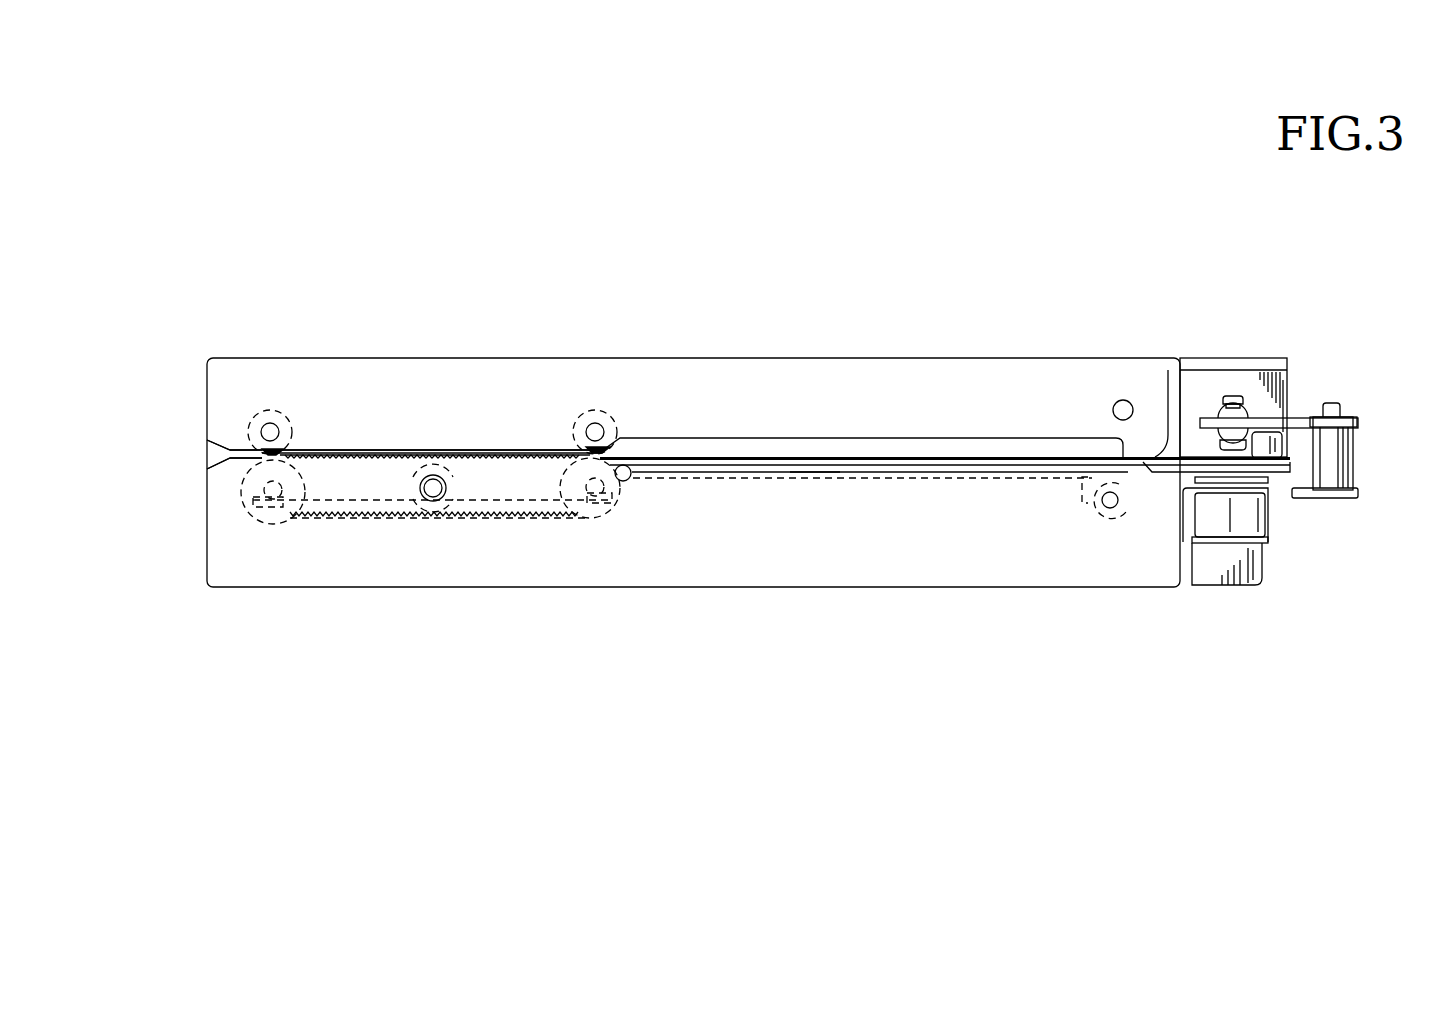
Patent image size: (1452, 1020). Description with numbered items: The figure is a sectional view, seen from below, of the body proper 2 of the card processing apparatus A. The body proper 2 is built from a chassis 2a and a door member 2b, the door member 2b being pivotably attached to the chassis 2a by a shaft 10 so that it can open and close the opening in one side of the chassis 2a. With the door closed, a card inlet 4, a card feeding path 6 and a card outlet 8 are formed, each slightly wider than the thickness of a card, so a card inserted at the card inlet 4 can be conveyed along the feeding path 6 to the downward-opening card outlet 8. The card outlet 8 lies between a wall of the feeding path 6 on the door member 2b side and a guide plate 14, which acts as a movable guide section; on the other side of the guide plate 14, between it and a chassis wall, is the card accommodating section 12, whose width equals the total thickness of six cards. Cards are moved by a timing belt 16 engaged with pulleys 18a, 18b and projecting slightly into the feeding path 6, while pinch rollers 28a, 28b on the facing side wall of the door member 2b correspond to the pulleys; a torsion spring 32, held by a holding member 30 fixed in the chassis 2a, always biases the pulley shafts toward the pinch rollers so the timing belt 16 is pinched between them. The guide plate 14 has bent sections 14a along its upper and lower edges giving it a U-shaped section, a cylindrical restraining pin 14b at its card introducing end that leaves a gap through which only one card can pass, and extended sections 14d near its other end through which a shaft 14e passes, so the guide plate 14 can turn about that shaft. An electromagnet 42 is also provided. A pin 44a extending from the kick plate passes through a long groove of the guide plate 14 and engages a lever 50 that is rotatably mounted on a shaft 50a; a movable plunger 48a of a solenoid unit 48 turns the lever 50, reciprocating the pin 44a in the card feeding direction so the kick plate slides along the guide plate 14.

The card processing apparatus A is at (233, 218).
The body proper 2 is at (808, 252).
The chassis 2a is at (773, 525).
The door member 2b is at (714, 388).
The card inlet 4 is at (212, 453).
The card feeding path 6 is at (427, 448).
The card outlet 8 is at (900, 443).
The shaft 10 is at (1123, 405).
The card accommodating section 12 is at (921, 467).
The guide plate 14 is at (975, 455).
The bent sections 14a is at (812, 480).
The restraining pin 14b is at (628, 478).
The extended sections 14d is at (1095, 508).
The shaft 14e is at (1112, 508).
The timing belt 16 is at (313, 517).
The pulley 18a is at (602, 513).
The pulley 18b is at (247, 485).
The pinch roller 28a is at (595, 423).
The pinch roller 28b is at (275, 410).
The holding member 30 is at (437, 488).
The torsion spring 32 is at (345, 508).
The electromagnet 42 is at (1248, 518).
The pin 44a is at (1268, 448).
The solenoid unit 48 is at (1258, 378).
The movable plunger 48a is at (1233, 398).
The lever 50 is at (1283, 428).
The shaft 50a is at (1353, 450).